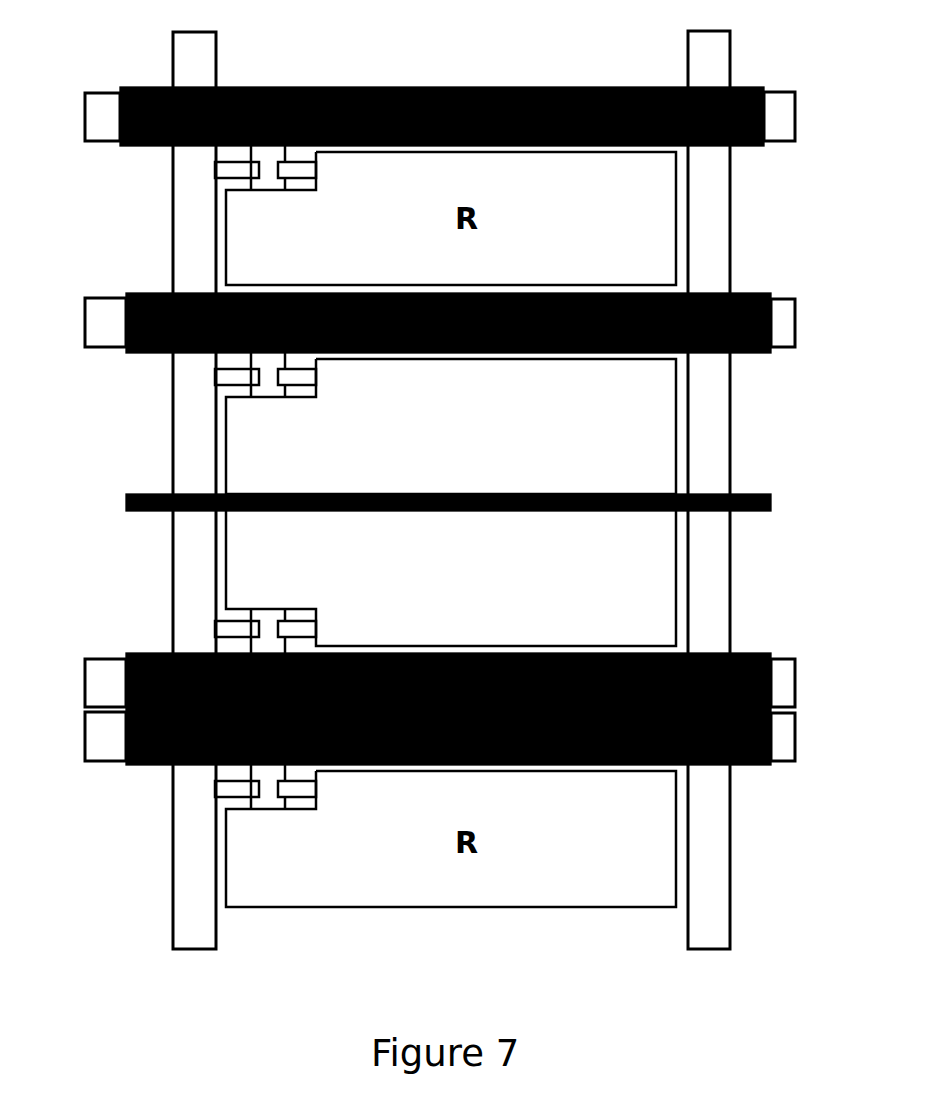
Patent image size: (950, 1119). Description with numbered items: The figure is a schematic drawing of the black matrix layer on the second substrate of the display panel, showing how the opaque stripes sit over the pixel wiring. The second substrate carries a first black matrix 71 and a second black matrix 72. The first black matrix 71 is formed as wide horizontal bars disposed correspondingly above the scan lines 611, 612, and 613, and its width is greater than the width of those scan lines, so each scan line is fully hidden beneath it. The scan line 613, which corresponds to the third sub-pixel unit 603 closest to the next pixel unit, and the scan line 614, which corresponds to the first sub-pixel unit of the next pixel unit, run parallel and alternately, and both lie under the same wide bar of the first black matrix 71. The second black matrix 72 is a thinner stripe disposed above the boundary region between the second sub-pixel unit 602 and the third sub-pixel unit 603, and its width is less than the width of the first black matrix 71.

The first black matrix 71 is at (138, 80).
The second black matrix 72 is at (118, 494).
The scan line 611 is at (787, 117).
The scan line 612 is at (773, 320).
The scan line 613 is at (775, 670).
The scan line 614 is at (775, 735).
The second sub-pixel unit 602 is at (671, 393).
The third sub-pixel unit 603 is at (671, 533).